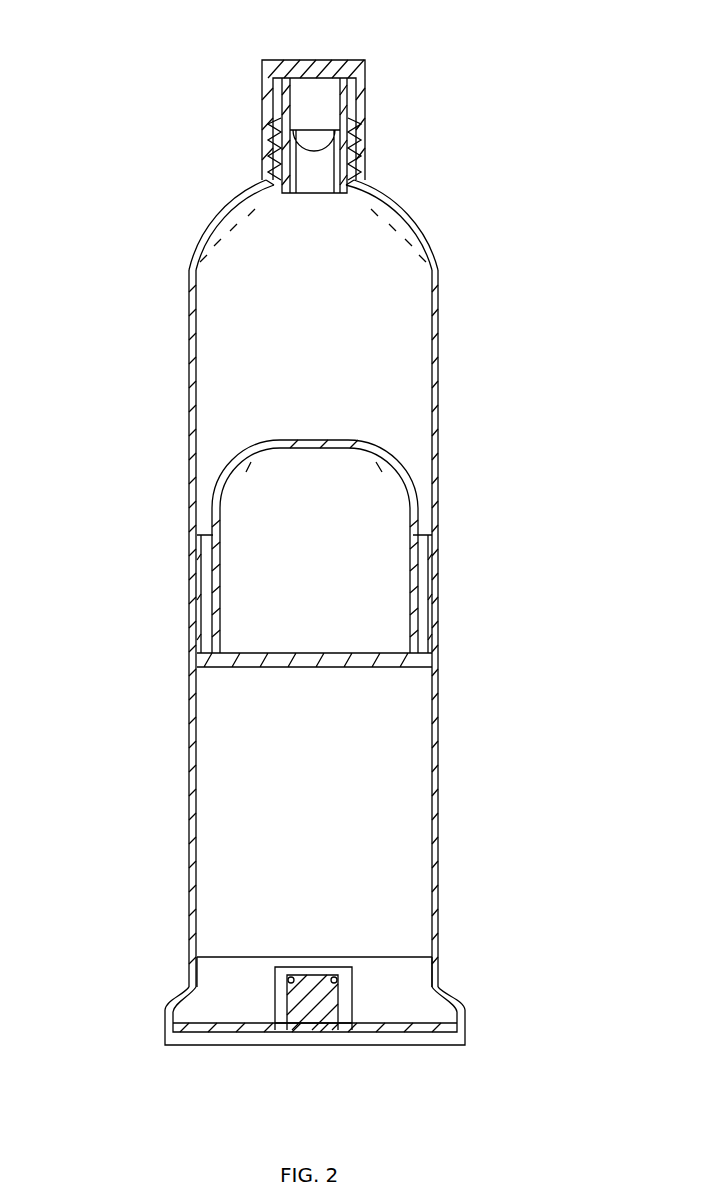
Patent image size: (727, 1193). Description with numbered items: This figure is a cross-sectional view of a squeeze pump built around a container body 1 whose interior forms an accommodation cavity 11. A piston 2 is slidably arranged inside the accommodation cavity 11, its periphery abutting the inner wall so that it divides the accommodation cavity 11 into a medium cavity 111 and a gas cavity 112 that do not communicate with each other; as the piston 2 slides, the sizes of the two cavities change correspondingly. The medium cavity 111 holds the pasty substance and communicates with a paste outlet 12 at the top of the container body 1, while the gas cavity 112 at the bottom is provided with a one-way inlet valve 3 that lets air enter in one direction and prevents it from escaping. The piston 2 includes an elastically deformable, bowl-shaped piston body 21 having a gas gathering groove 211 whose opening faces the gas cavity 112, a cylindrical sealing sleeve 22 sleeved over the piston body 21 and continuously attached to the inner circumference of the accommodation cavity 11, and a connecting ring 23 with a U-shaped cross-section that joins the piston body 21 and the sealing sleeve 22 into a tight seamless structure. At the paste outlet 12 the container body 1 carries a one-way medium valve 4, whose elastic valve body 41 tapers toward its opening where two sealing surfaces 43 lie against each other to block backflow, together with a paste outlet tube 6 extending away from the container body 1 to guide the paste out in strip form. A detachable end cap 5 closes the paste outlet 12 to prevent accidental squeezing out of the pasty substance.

The container body 1 is at (379, 530).
The accommodation cavity 11 is at (379, 612).
The medium cavity 111 is at (350, 367).
The gas cavity 112 is at (340, 760).
The paste outlet 12 is at (313, 103).
The piston 2 is at (228, 512).
The piston body 21 is at (210, 526).
The gas gathering groove 211 is at (260, 517).
The sealing sleeve 22 is at (201, 587).
The connecting ring 23 is at (251, 638).
The one-way inlet valve 3 is at (312, 997).
The one-way medium valve 4 is at (346, 147).
The valve body 41 is at (320, 175).
The sealing surfaces 43 is at (283, 120).
The end cap 5 is at (357, 70).
The paste outlet tube 6 is at (345, 118).